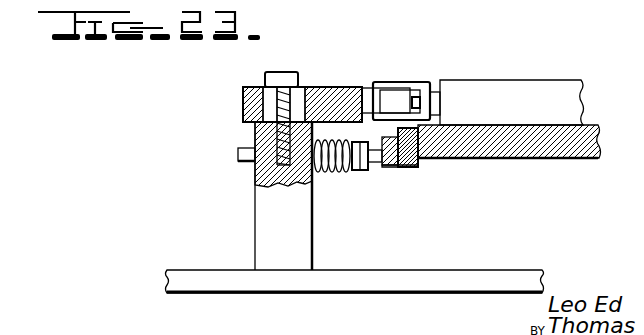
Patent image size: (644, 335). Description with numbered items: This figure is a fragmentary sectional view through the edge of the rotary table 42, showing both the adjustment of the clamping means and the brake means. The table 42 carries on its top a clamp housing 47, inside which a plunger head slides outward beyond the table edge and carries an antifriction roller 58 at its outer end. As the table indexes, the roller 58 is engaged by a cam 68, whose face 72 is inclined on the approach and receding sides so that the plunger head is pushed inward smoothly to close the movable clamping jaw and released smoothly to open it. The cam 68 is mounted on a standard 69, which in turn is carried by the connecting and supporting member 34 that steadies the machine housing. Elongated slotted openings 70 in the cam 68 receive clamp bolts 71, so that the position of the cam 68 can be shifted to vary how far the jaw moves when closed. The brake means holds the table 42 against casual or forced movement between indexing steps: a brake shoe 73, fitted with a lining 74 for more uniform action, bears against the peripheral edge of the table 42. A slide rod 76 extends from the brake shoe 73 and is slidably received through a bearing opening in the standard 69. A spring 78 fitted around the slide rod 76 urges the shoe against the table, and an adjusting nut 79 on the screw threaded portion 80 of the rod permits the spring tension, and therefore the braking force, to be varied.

The connecting and supporting member 34 is at (390, 292).
The table 42 is at (595, 158).
The clamp housing 47 is at (554, 90).
The antifriction roller 58 is at (392, 92).
The cam 68 is at (243, 102).
The standard 69 is at (261, 204).
The elongated slotted openings 70 is at (312, 95).
The clamp bolts 71 is at (280, 72).
The cam face 72 is at (352, 88).
The brake shoe 73 is at (405, 168).
The lining 74 is at (420, 165).
The slide rod 76 is at (244, 157).
The spring 78 is at (333, 173).
The adjusting nut 79 is at (362, 172).
The screw threaded portion 80 is at (378, 168).